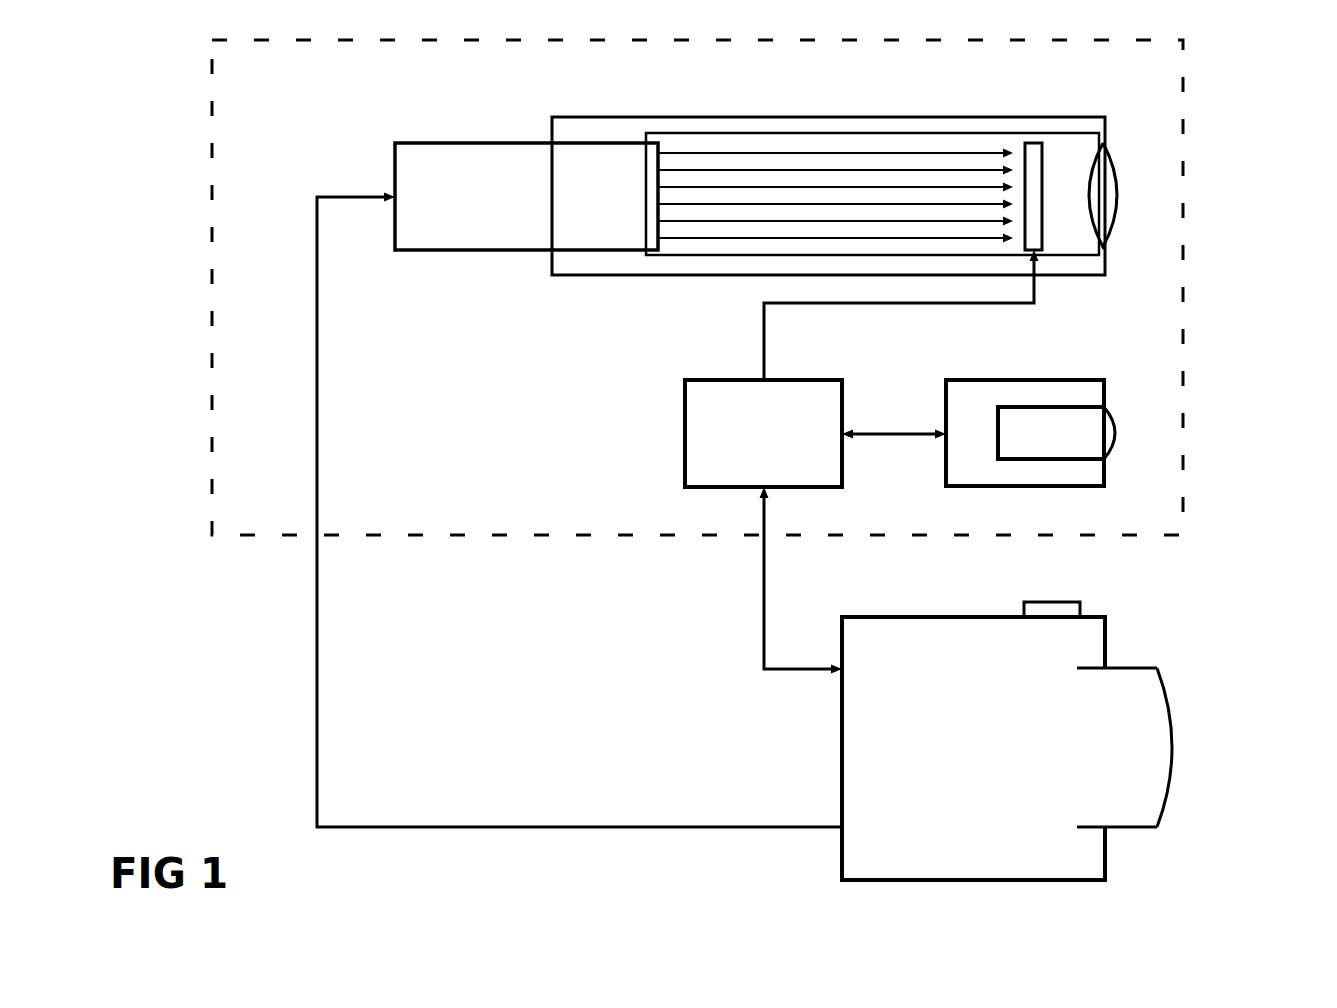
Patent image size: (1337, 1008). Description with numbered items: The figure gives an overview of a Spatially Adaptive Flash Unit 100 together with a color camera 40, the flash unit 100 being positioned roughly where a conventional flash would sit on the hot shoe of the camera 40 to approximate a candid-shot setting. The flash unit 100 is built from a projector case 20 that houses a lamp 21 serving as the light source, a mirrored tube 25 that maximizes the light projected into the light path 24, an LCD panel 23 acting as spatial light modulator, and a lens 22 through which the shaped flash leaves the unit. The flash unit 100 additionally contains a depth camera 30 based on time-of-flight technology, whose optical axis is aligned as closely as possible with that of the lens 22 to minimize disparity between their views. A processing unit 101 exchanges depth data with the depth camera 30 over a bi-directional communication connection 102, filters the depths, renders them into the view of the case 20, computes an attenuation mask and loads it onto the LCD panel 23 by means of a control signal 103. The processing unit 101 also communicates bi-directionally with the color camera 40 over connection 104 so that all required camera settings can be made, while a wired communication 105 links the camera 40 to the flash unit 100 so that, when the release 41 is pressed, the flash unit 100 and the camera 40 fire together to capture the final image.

The spatially adaptive flash unit 100 is at (203, 355).
The case 20 is at (787, 117).
The lamp 21 is at (395, 157).
The lens 22 is at (1105, 210).
The LCD panel 23 is at (1045, 223).
The light path 24 is at (817, 170).
The mirrored tube 25 is at (850, 133).
The depth camera 30 is at (1104, 393).
The color camera 40 is at (1100, 640).
The release 41 is at (1045, 600).
The processing unit 101 is at (685, 430).
The communication connection 102 is at (900, 433).
The control signal 103 is at (764, 345).
The bi-directional communication 104 is at (762, 615).
The wired communication 105 is at (317, 707).